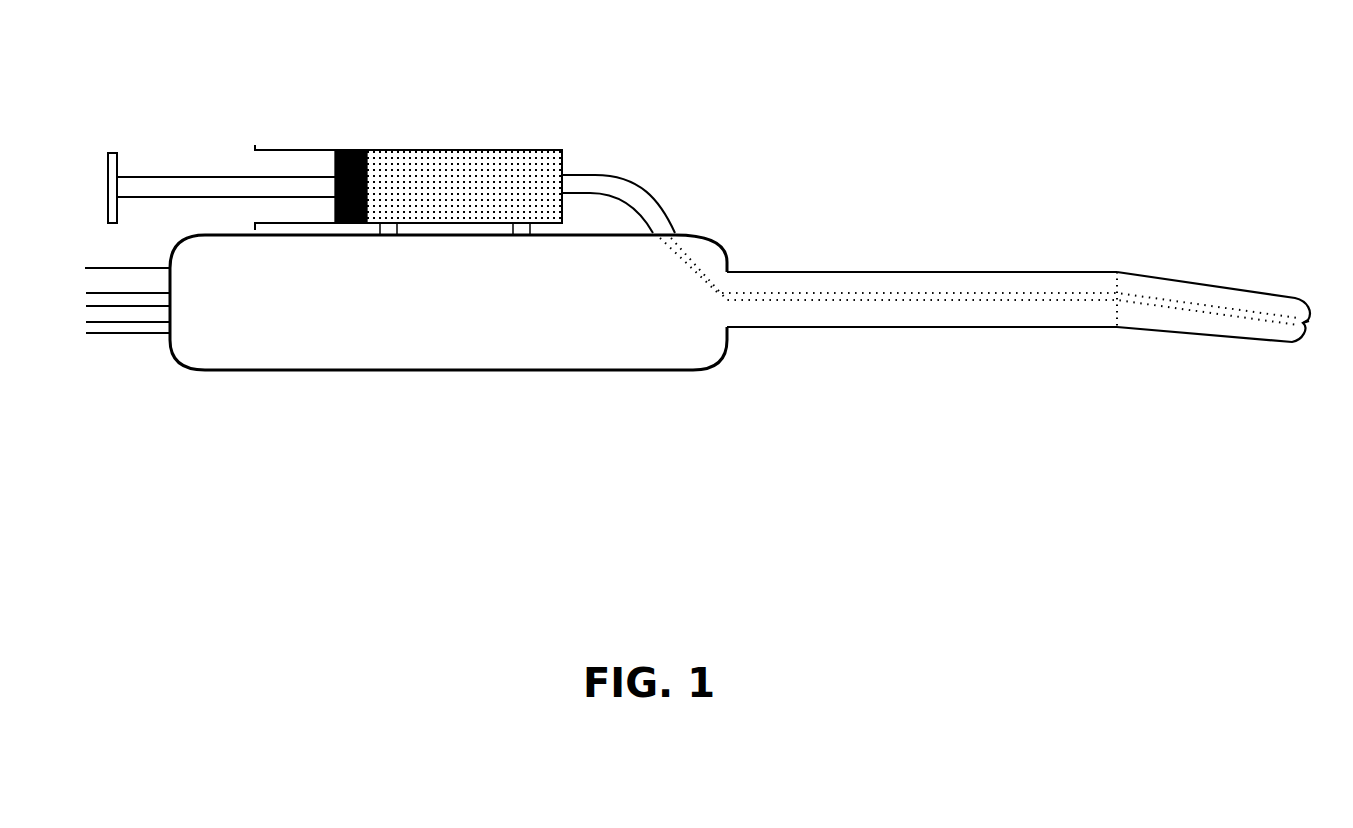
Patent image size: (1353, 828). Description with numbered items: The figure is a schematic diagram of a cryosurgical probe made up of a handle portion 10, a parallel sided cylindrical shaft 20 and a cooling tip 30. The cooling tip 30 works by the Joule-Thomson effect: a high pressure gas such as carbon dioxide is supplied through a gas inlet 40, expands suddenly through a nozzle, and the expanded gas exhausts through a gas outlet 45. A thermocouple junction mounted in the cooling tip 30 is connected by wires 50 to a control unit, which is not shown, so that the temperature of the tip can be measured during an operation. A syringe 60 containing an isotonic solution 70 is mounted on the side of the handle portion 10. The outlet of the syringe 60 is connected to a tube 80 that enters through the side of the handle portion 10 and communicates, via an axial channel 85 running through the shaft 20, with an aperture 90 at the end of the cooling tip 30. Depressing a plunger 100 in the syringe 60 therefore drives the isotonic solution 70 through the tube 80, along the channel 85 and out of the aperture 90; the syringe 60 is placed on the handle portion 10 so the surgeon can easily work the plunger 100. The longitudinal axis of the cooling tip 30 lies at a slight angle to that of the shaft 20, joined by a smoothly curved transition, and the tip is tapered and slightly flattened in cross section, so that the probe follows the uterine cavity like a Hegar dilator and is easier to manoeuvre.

The handle portion 10 is at (392, 371).
The shaft 20 is at (893, 329).
The cooling tip 30 is at (1297, 279).
The gas inlet 40 is at (97, 293).
The gas outlet 45 is at (93, 322).
The wires 50 is at (105, 266).
The syringe 60 is at (290, 152).
The isotonic solution 70 is at (497, 175).
The tube 80 is at (640, 187).
The axial channel 85 is at (880, 293).
The aperture 90 is at (1312, 326).
The plunger 100 is at (165, 177).